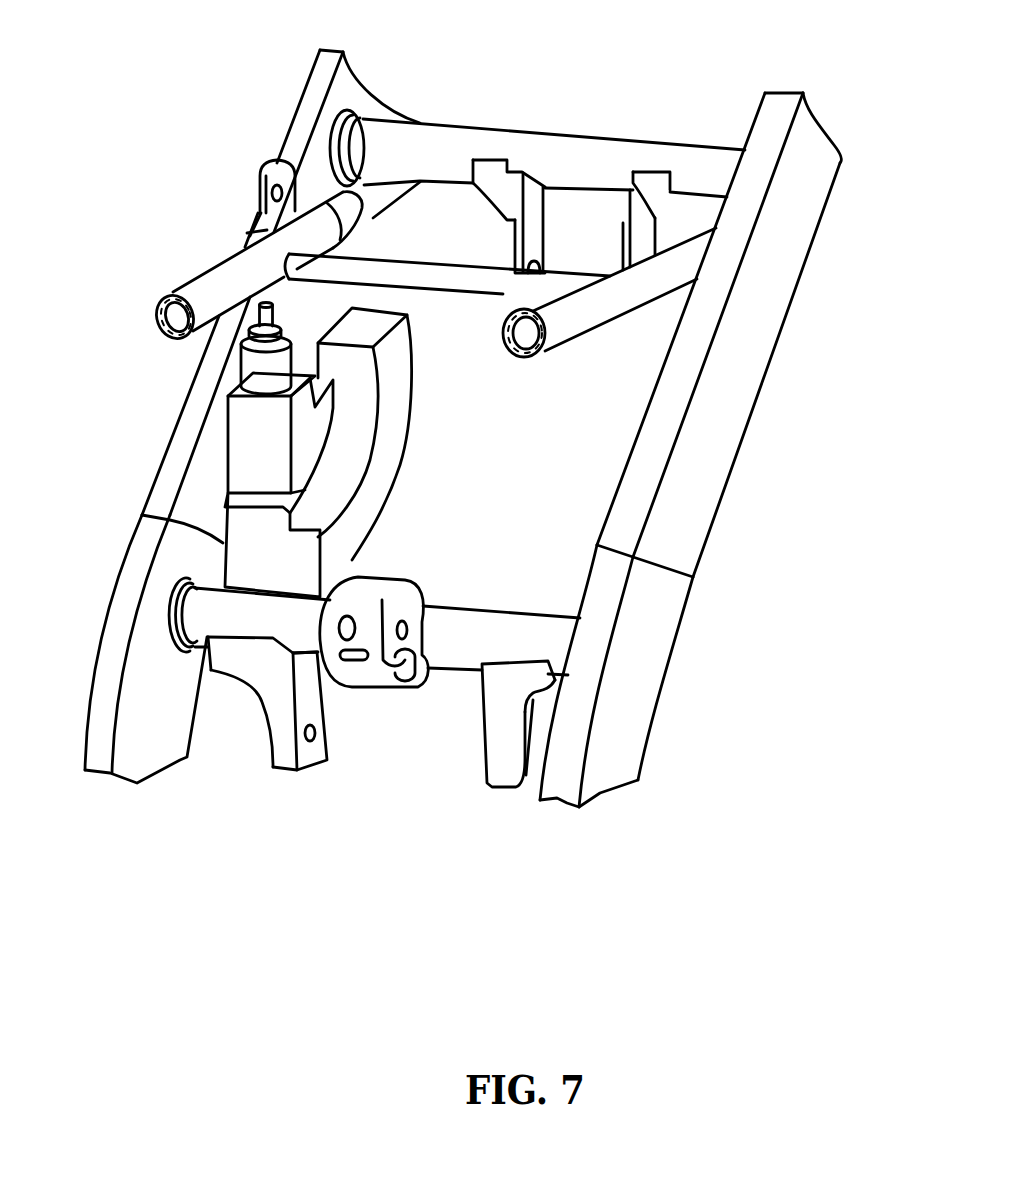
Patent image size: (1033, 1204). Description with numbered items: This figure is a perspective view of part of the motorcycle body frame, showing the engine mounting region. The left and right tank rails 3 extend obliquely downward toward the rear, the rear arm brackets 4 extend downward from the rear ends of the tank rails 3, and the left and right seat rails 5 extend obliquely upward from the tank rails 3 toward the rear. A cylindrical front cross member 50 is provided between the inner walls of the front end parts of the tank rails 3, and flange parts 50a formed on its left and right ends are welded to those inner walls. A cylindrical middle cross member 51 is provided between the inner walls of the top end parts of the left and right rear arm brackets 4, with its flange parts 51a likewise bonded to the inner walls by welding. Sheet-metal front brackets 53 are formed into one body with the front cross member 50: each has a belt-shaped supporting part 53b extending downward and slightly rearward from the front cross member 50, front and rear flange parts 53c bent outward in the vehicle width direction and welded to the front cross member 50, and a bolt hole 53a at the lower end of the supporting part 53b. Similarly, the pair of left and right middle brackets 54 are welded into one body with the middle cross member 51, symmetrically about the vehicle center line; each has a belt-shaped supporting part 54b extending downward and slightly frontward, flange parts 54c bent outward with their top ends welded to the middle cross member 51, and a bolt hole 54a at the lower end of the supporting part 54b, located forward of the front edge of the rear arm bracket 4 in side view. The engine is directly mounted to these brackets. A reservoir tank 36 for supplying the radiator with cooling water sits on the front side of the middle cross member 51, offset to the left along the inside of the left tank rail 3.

The tank rails 3 is at (290, 116).
The rear arm brackets 4 is at (108, 600).
The seat rails 5 is at (208, 270).
The reservoir tank 36 is at (405, 471).
The front cross member 50 is at (460, 120).
The flange parts 50a is at (366, 104).
The middle cross member 51 is at (471, 604).
The flange parts 51a is at (173, 583).
The front brackets 53 is at (584, 228).
The bolt hole 53a is at (530, 275).
The supporting parts 53b is at (513, 245).
The flange parts 53c is at (491, 172).
The middle brackets 54 is at (382, 708).
The bolt hole 54a is at (315, 743).
The supporting parts 54b is at (317, 705).
The flange parts 54c is at (243, 665).